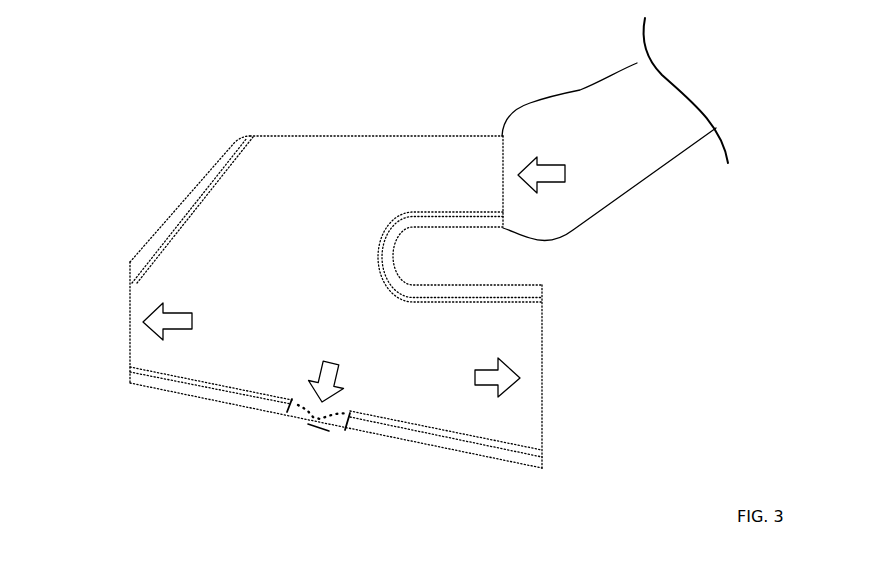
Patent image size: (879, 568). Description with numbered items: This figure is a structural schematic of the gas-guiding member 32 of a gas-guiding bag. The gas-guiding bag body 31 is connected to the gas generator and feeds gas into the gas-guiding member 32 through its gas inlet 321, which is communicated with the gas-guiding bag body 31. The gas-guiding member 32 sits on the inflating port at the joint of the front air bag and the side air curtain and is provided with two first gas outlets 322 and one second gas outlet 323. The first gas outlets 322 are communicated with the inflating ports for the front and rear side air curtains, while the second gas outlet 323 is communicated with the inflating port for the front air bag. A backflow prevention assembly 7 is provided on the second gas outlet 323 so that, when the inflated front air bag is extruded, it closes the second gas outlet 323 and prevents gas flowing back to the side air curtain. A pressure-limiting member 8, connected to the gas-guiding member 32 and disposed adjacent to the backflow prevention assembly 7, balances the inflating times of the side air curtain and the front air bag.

The gas-guiding bag body 31 is at (582, 103).
The gas-guiding member 32 is at (354, 138).
The gas inlet 321 is at (503, 178).
The first gas outlet 322 is at (145, 304).
The second gas outlet 323 is at (345, 430).
The backflow prevention assembly 7 is at (308, 424).
The pressure-limiting member 8 is at (308, 412).